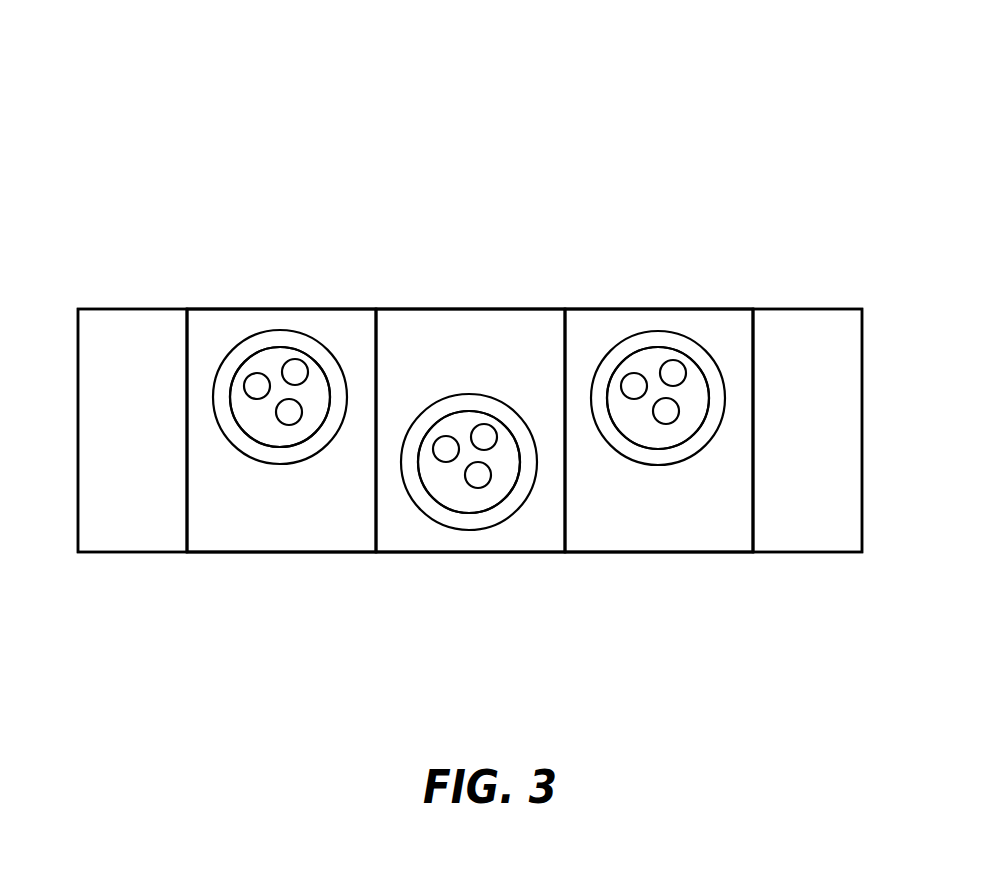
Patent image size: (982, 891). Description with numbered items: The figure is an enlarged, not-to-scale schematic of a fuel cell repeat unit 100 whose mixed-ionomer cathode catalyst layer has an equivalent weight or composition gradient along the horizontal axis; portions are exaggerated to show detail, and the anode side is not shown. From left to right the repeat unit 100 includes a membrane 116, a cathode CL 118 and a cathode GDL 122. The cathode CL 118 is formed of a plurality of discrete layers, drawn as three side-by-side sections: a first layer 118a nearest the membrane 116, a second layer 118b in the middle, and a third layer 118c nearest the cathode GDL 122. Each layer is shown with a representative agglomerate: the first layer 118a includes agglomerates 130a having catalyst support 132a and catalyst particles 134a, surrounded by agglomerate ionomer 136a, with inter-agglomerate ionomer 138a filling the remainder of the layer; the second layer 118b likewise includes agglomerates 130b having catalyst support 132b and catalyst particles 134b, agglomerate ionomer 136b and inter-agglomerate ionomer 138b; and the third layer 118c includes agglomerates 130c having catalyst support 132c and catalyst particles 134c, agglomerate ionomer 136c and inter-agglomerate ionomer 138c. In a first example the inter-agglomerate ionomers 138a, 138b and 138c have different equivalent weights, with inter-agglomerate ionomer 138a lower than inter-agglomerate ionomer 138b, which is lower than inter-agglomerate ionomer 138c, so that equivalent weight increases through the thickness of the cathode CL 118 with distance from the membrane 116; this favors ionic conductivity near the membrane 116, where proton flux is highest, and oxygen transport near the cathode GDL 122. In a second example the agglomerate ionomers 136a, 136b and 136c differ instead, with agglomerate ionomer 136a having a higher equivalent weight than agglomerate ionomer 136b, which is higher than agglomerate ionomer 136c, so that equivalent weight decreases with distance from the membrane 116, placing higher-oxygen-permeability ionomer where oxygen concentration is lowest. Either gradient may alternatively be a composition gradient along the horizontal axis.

The fuel cell repeat unit 100 is at (314, 142).
The membrane 116 is at (107, 555).
The cathode GDL 122 is at (785, 556).
The cathode CL 118 is at (332, 555).
The first layer 118a is at (201, 555).
The second layer 118b is at (506, 306).
The third layer 118c is at (743, 306).
The inter-agglomerate ionomer 138a is at (232, 528).
The inter-agglomerate ionomer 138b is at (409, 328).
The inter-agglomerate ionomer 138c is at (640, 532).
The agglomerates 130a is at (312, 352).
The agglomerates 130b is at (447, 508).
The agglomerates 130c is at (702, 356).
The catalyst support 132a is at (258, 362).
The catalyst support 132b is at (439, 485).
The catalyst support 132c is at (634, 362).
The catalyst particles 134a is at (288, 370).
The catalyst particles 134b is at (477, 485).
The catalyst particles 134c is at (668, 369).
The agglomerate ionomer 136a is at (225, 363).
The agglomerate ionomer 136b is at (510, 502).
The agglomerate ionomer 136c is at (603, 370).